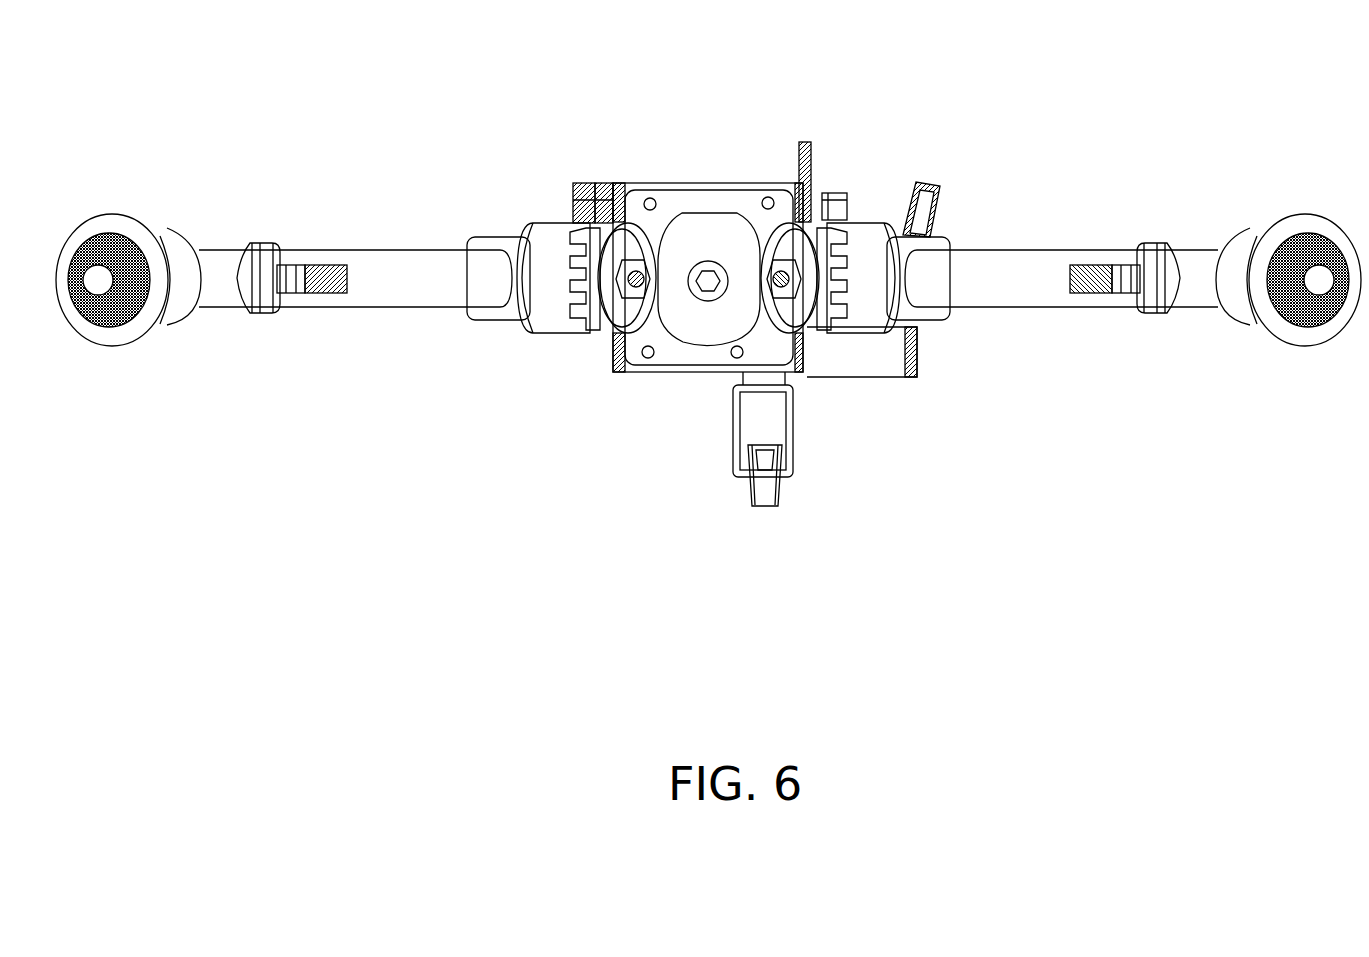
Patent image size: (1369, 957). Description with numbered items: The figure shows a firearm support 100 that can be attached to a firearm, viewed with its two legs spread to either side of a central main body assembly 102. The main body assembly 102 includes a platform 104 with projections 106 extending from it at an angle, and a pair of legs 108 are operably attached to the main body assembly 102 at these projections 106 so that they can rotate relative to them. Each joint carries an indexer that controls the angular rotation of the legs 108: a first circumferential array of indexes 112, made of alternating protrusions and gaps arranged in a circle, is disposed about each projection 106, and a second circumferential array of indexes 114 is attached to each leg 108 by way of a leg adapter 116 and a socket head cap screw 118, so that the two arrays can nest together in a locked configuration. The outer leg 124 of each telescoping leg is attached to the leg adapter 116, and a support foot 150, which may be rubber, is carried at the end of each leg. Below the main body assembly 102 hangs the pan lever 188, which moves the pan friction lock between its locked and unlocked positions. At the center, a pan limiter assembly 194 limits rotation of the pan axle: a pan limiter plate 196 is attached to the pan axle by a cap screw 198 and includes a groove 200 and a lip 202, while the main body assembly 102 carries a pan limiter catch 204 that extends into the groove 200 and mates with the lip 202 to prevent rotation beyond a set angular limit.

The firearm support 100 is at (888, 50).
The main body assembly 102 is at (597, 168).
The platform 104 is at (618, 373).
The projections 106 is at (547, 223).
The legs 108 is at (342, 200).
The first circumferential array of indexes 112 is at (578, 333).
The second circumferential array of indexes 114 is at (605, 330).
The leg adapter 116 is at (475, 243).
The socket head cap screw 118 is at (627, 282).
The outer leg 124 is at (385, 303).
The support foot 150 is at (168, 235).
The pan lever 188 is at (763, 507).
The pan limiter assembly 194 is at (705, 157).
The pan limiter plate 196 is at (710, 335).
The cap screw 198 is at (707, 258).
The groove 200 is at (668, 355).
The lip 202 is at (683, 343).
The pan limiter catch 204 is at (658, 265).